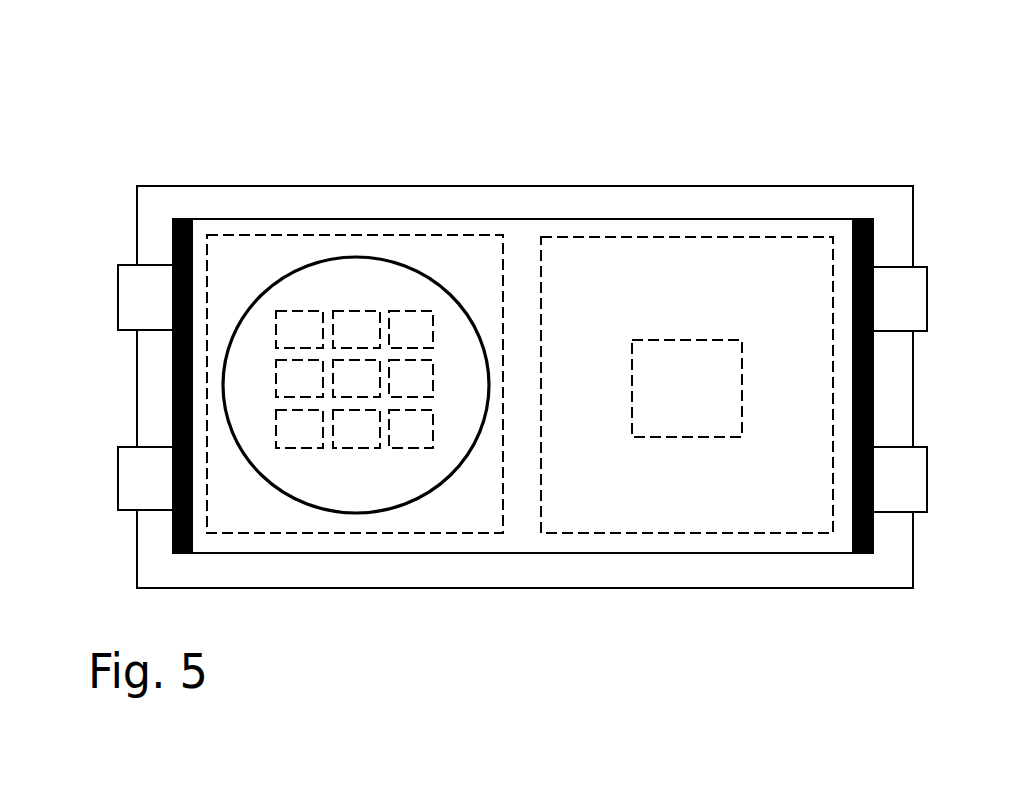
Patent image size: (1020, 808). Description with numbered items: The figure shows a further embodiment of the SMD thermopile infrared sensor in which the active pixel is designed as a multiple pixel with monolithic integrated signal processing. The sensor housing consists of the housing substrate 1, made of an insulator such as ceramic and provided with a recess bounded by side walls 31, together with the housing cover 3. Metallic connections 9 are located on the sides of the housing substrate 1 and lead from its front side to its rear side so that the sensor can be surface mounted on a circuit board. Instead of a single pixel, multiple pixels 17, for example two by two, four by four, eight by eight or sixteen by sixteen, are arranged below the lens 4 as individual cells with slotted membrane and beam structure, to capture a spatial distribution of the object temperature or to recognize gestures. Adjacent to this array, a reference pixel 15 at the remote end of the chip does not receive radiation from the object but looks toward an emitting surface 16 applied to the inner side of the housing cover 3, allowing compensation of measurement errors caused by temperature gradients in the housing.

The housing substrate 1 is at (570, 185).
The housing cover 3 is at (700, 218).
The sensor window 4 is at (359, 287).
The metallic connection 9 is at (118, 298).
The reference pixel 15 is at (687, 437).
The emitting surface 16 is at (630, 533).
The multiple pixels 17 is at (333, 311).
The side wall 31 is at (150, 423).